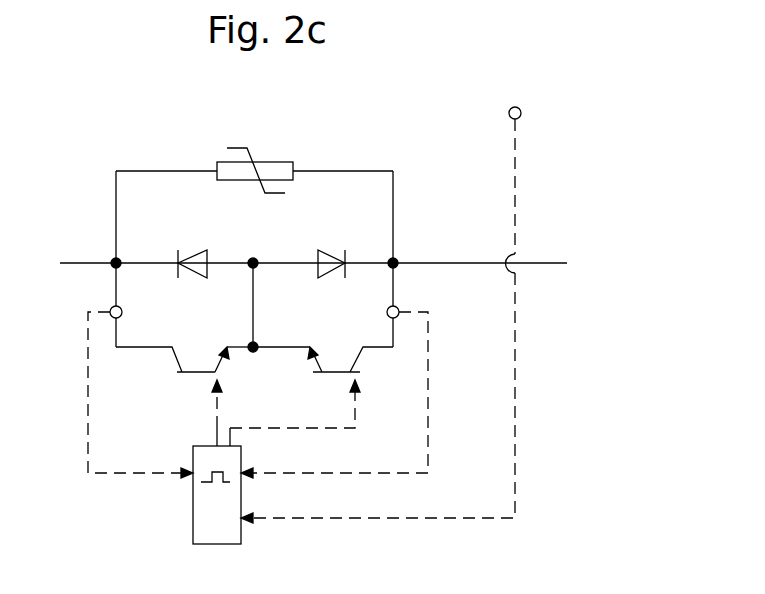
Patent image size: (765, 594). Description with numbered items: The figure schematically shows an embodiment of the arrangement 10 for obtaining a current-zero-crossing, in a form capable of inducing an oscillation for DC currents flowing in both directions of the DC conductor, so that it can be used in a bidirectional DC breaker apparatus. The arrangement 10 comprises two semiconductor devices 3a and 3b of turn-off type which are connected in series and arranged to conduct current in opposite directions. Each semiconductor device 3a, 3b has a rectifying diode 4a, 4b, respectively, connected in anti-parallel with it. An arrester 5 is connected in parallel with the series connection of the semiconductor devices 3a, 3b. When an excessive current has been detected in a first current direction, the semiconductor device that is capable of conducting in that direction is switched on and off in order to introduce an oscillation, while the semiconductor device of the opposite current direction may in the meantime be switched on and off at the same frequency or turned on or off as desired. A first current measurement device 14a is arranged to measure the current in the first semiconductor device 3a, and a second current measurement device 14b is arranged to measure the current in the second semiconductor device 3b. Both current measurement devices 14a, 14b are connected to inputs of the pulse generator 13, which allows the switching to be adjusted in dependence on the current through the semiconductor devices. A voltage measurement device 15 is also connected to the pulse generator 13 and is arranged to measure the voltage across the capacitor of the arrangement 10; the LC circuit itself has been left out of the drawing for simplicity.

The arrangement 10 is at (604, 522).
The arrester 5 is at (278, 162).
The rectifying diode 4a is at (200, 253).
The rectifying diode 4b is at (333, 250).
The first current measurement device 14a is at (122, 312).
The second current measurement device 14b is at (387, 312).
The first semiconductor device 3a is at (188, 373).
The second semiconductor device 3b is at (323, 373).
The pulse generator 13 is at (193, 516).
The voltage measurement device 15 is at (510, 118).